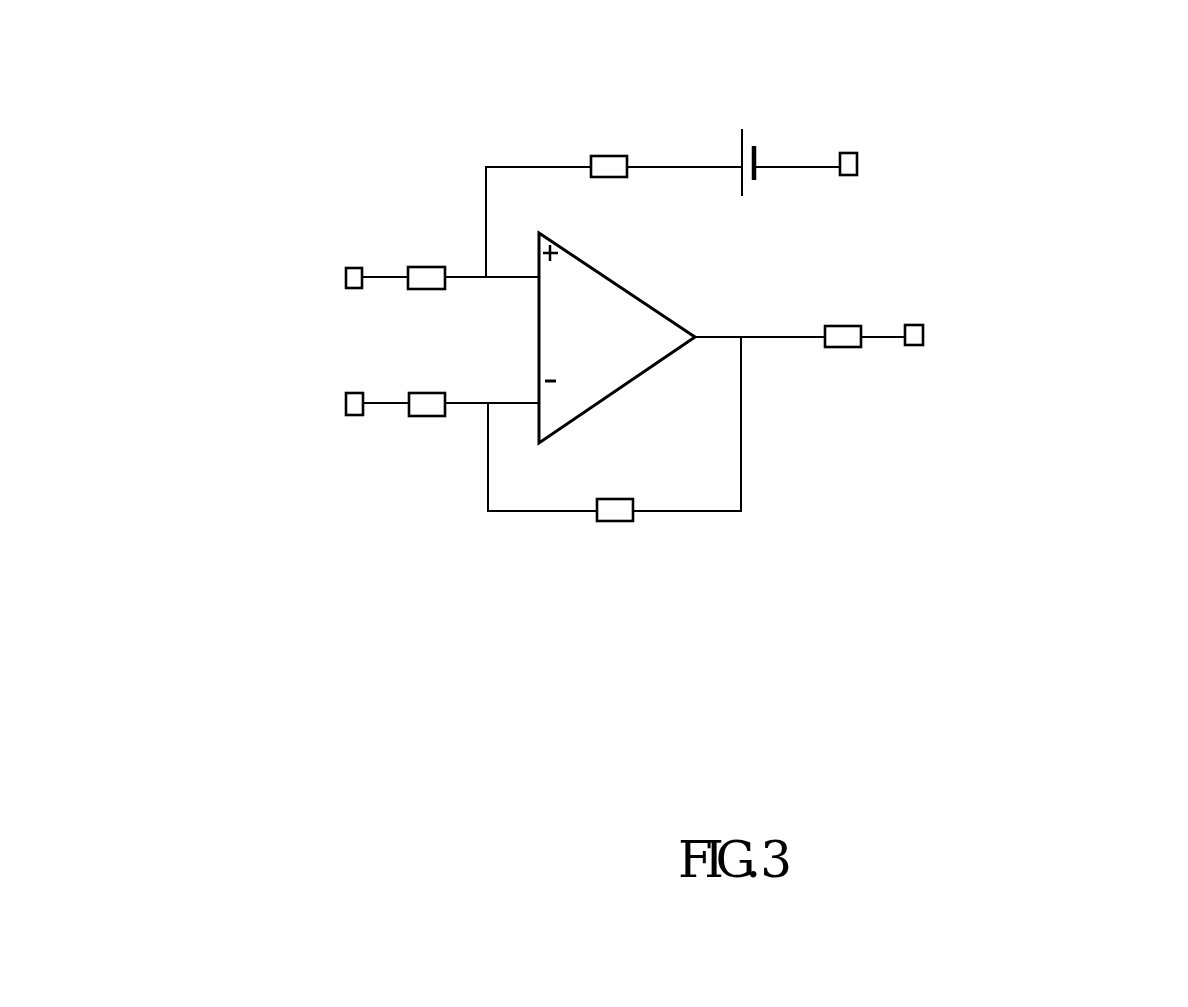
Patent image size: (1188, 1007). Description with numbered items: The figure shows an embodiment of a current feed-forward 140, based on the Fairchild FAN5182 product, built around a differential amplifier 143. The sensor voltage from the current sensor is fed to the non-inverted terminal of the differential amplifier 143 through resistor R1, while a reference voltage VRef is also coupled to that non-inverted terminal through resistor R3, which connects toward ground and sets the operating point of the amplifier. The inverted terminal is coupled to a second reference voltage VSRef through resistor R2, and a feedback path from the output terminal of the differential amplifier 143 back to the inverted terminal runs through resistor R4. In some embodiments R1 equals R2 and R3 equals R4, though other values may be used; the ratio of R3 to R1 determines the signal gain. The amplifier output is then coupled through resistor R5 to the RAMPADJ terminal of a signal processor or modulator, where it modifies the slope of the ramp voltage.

The current feed-forward 140 is at (718, 291).
The differential amplifier 143 is at (626, 355).
The resistor R1 is at (430, 254).
The resistor R2 is at (427, 382).
The resistor R3 is at (604, 144).
The resistor R4 is at (617, 487).
The resistor R5 is at (844, 315).